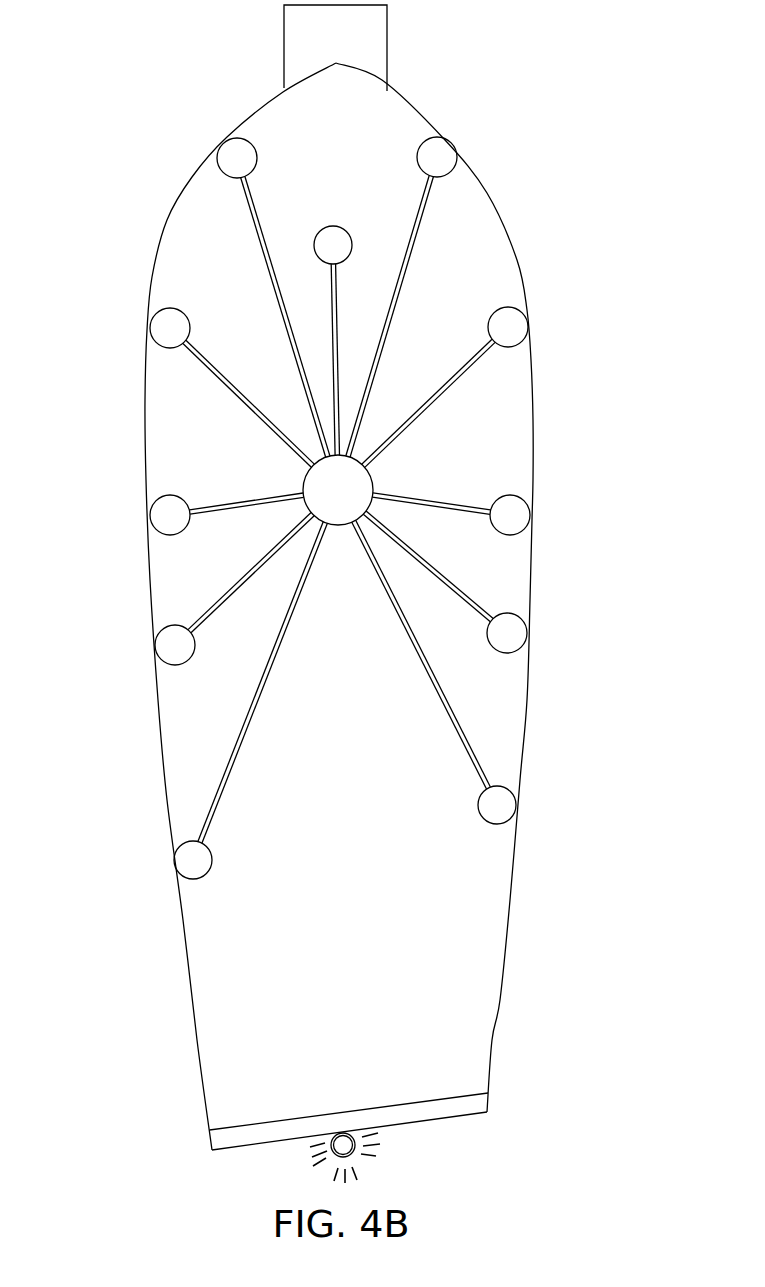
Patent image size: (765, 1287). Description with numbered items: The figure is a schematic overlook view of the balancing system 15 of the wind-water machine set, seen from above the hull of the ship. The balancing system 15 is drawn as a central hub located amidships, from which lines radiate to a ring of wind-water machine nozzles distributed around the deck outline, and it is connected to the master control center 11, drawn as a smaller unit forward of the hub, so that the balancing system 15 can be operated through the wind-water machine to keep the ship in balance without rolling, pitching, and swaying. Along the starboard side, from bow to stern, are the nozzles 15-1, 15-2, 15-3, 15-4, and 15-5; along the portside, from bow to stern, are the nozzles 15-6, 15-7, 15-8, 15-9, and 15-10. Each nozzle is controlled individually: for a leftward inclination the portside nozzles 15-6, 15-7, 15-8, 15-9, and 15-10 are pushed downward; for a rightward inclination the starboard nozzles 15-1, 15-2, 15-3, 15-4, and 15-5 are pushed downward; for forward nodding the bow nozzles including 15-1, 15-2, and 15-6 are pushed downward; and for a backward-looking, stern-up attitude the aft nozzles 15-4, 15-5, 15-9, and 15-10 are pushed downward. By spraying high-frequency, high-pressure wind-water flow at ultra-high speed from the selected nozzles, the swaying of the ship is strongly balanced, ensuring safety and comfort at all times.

The master control center 11 is at (350, 238).
The balancing system 15 is at (375, 480).
The wind-water machine nozzle 15-1 is at (440, 150).
The wind-water machine nozzle 15-2 is at (512, 325).
The wind-water machine nozzle 15-3 is at (513, 513).
The wind-water machine nozzle 15-4 is at (512, 635).
The wind-water machine nozzle 15-5 is at (500, 808).
The wind-water machine nozzle 15-6 is at (230, 148).
The wind-water machine nozzle 15-7 is at (167, 322).
The wind-water machine nozzle 15-8 is at (167, 515).
The wind-water machine nozzle 15-9 is at (172, 645).
The wind-water machine nozzle 15-10 is at (193, 858).